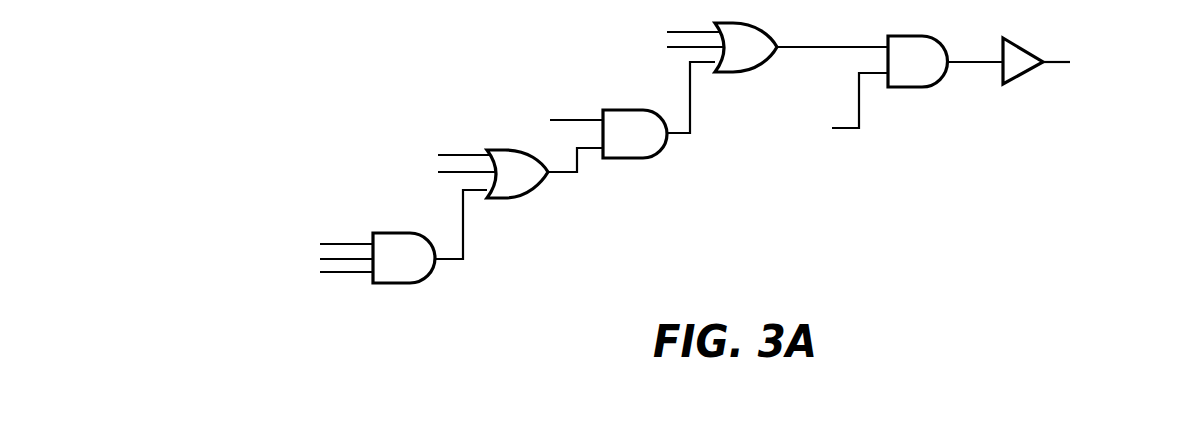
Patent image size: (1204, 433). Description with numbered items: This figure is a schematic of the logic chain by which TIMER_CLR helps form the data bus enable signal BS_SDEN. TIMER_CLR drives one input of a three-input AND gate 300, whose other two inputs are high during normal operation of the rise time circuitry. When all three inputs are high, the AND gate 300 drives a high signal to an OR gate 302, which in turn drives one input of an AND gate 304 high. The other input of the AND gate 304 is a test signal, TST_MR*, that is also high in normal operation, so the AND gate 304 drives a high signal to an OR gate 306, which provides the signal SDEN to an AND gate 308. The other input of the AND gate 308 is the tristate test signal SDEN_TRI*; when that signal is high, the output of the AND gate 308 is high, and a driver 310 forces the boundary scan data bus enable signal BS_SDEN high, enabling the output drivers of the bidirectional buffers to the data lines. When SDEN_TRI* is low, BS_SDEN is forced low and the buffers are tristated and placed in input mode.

The three-input AND gate 300 is at (407, 284).
The OR gate 302 is at (515, 198).
The AND gate 304 is at (638, 158).
The OR gate 306 is at (745, 22).
The AND gate 308 is at (923, 35).
The driver 310 is at (1013, 83).